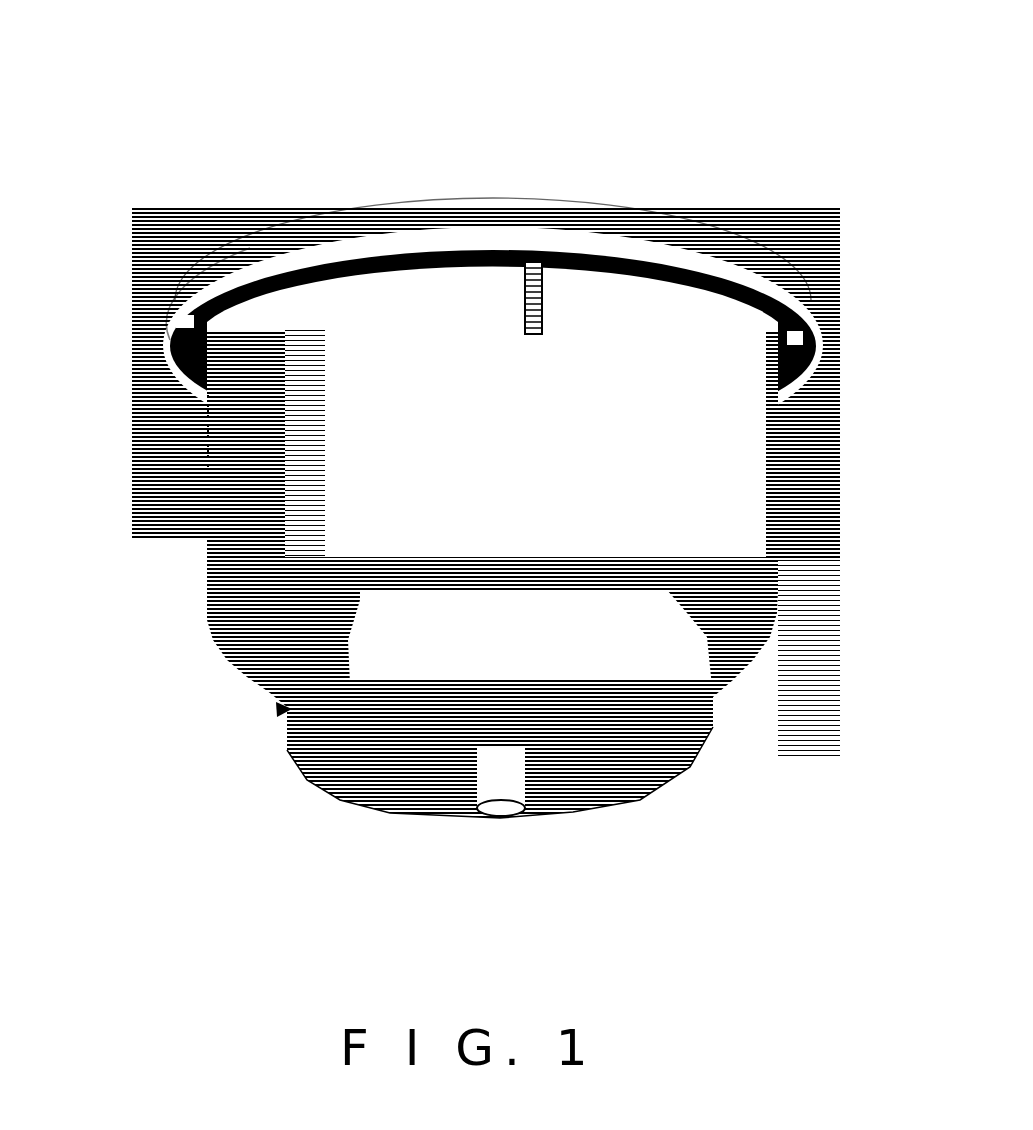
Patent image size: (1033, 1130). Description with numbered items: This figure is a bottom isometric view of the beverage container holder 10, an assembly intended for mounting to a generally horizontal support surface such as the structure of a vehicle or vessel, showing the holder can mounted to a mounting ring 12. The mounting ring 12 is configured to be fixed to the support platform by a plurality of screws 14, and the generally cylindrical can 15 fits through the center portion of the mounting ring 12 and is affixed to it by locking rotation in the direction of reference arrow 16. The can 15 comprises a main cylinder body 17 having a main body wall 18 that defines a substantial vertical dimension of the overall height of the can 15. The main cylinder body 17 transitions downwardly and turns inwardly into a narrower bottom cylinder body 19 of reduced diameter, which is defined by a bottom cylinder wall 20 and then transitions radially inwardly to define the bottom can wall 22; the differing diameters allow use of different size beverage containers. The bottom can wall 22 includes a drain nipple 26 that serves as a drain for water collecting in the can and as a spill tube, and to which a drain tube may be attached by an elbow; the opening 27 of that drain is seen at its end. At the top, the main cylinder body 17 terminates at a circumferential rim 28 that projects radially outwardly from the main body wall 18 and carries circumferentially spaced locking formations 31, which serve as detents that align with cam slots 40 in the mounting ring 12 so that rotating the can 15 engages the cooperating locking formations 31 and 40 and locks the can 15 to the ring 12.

The holder 10 is at (325, 128).
The mounting ring 12 is at (680, 235).
The screws 14 is at (537, 290).
The can 15 is at (227, 568).
The reference arrow 16 is at (452, 170).
The main cylinder body 17 is at (203, 507).
The main body wall 18 is at (280, 510).
The bottom cylinder body 19 is at (283, 710).
The bottom cylinder wall 20 is at (352, 680).
The bottom can wall 22 is at (400, 765).
The drain nipple 26 is at (520, 778).
The drain opening 27 is at (503, 812).
The circumferential rim 28 is at (217, 285).
The locking formations 31 is at (172, 318).
The cam slots 40 is at (262, 290).